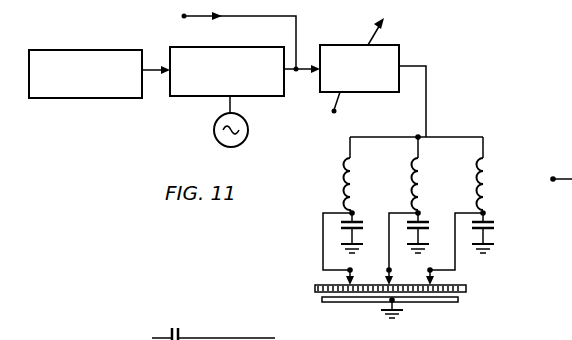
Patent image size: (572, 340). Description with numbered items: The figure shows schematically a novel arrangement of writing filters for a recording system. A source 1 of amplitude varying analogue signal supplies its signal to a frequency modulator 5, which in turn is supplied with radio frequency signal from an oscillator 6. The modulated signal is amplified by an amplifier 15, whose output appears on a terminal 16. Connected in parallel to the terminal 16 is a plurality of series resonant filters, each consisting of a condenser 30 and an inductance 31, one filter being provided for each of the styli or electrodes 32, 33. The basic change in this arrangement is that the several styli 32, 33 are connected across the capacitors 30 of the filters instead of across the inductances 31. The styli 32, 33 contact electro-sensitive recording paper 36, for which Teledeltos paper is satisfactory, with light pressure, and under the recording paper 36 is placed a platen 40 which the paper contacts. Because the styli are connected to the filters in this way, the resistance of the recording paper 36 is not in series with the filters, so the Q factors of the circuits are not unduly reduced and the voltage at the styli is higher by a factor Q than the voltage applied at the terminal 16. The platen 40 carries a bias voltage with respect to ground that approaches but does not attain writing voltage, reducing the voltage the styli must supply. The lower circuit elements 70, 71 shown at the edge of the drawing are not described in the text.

The source of amplitude varying analogue signal 1 is at (80, 50).
The frequency modulator 5 is at (231, 47).
The oscillator 6 is at (248, 131).
The amplifier 15 is at (388, 50).
The terminal 16 is at (428, 136).
The condenser 30 is at (358, 220).
The inductance 31 is at (346, 180).
The stylus 32 is at (352, 280).
The stylus 33 is at (391, 280).
The electro-sensitive recording paper 36 is at (455, 290).
The platen 40 is at (441, 302).
The capacitor 70 is at (230, 337).
The conductor 71 is at (356, 333).